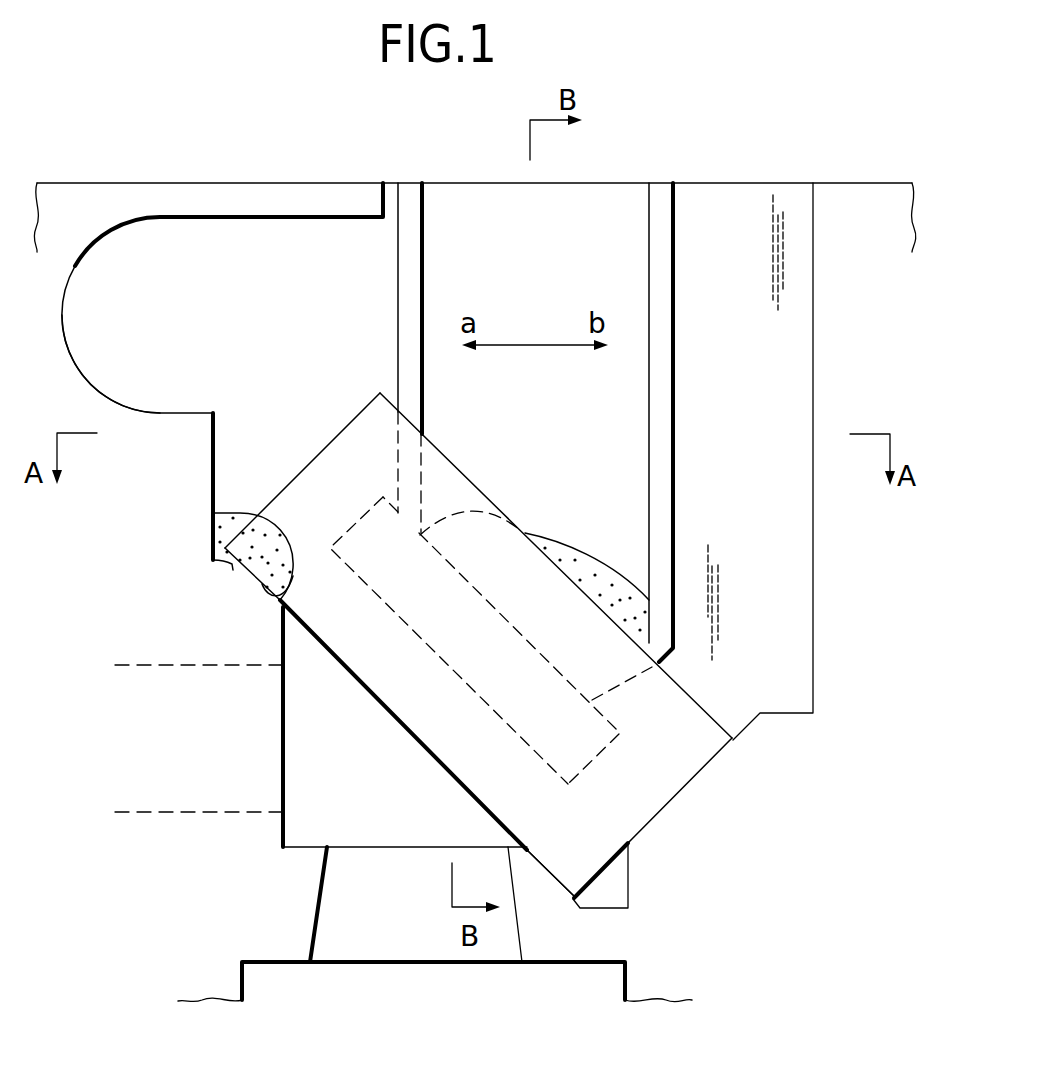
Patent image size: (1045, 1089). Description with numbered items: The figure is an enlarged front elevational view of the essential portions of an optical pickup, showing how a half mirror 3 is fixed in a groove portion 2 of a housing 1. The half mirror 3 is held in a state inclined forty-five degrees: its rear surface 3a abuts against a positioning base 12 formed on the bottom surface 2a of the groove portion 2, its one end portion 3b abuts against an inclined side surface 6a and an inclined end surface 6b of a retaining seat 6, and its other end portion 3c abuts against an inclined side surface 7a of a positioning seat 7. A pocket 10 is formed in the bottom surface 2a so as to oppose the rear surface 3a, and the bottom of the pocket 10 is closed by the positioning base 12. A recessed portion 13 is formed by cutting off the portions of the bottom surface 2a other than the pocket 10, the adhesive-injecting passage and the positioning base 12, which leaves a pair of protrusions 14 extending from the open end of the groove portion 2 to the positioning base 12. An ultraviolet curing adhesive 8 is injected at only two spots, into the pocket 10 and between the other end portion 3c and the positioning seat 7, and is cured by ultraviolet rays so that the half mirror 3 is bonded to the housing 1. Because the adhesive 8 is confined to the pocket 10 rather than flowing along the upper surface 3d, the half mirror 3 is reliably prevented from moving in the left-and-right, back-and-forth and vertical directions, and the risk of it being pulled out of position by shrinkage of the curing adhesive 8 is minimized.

The housing 1 is at (302, 200).
The groove portion 2 is at (426, 978).
The bottom surface of groove portion 2a is at (744, 174).
The half mirror 3 is at (488, 645).
The rear surface of half mirror 3a is at (440, 503).
The one end portion of half mirror 3b is at (656, 787).
The other end portion of half mirror 3c is at (330, 458).
The upper surface of half mirror 3d is at (502, 524).
The retaining seat 6 is at (412, 818).
The inclined side surface of retaining seat 6a is at (550, 858).
The inclined end surface of retaining seat 6b is at (637, 820).
The positioning seat 7 is at (248, 580).
The inclined side surface of positioning seat 7a is at (290, 582).
The ultraviolet curing adhesive 8 is at (275, 549).
The pocket 10 is at (478, 592).
The positioning base 12 is at (330, 748).
The recessed portion 13 is at (288, 335).
The protrusions 14 is at (410, 320).